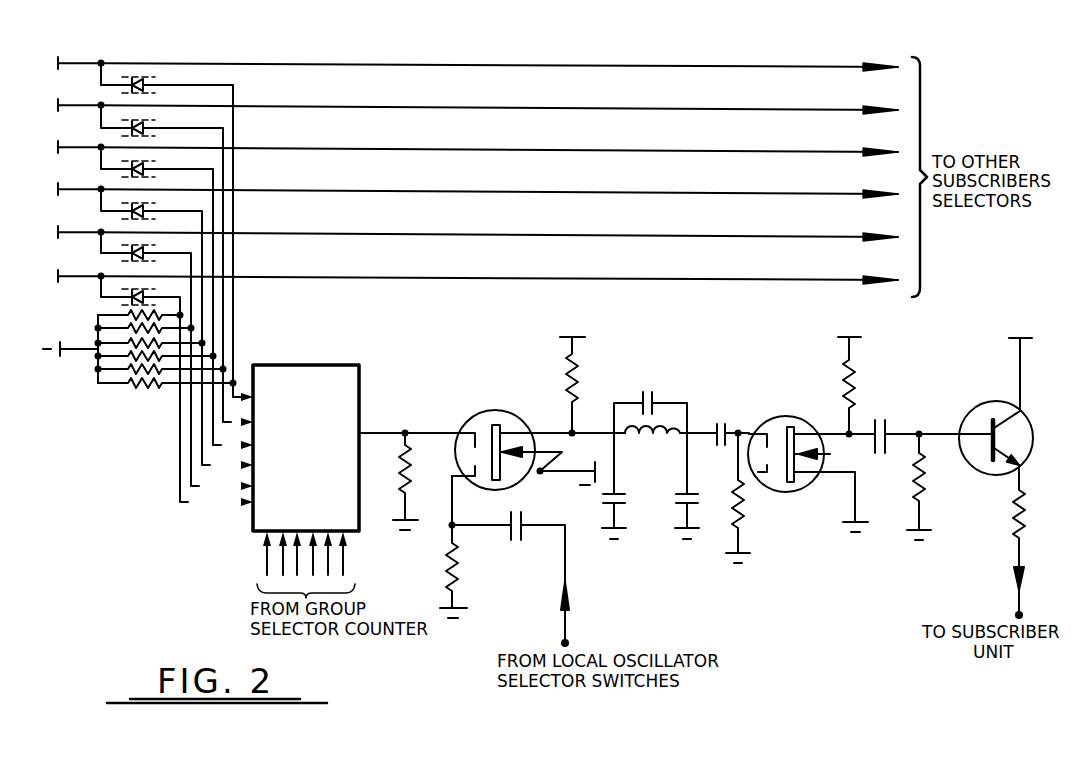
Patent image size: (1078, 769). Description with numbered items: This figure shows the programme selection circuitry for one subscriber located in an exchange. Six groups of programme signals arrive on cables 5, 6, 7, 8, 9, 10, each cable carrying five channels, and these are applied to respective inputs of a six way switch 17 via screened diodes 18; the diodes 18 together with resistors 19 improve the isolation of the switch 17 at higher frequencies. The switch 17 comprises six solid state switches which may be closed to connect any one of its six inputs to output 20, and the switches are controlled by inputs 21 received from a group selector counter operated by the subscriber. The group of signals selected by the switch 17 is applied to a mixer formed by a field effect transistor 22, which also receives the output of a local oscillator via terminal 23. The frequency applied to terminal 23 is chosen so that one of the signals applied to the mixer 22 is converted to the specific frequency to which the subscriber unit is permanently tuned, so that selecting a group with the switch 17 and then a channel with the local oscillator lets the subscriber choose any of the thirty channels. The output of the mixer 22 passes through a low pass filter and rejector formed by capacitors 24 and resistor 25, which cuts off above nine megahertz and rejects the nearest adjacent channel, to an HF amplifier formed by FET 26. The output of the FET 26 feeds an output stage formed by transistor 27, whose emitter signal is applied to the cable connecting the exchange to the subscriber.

The cable 5 is at (58, 60).
The cable 6 is at (58, 103).
The cable 7 is at (58, 145).
The cable 8 is at (58, 187).
The cable 9 is at (58, 230).
The cable 10 is at (60, 273).
The six way switch 17 is at (290, 380).
The screened diodes 18 is at (140, 76).
The resistors 19 is at (130, 313).
The output 20 is at (390, 432).
The inputs 21 is at (345, 558).
The field effect transistor 22 is at (478, 425).
The terminal 23 is at (567, 640).
The capacitors 24 is at (656, 400).
The resistor 25 is at (645, 443).
The FET 26 is at (782, 428).
The transistor 27 is at (982, 418).